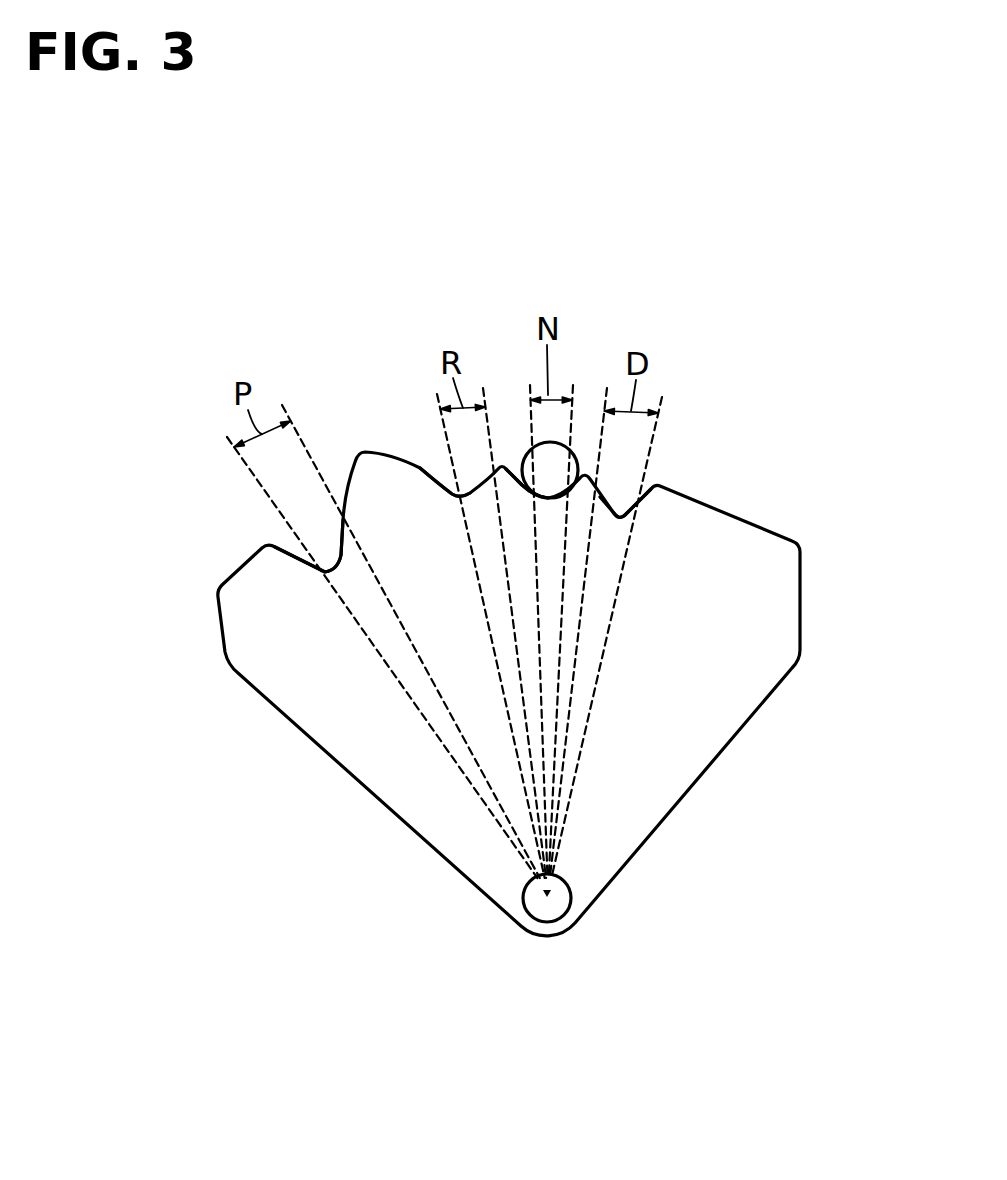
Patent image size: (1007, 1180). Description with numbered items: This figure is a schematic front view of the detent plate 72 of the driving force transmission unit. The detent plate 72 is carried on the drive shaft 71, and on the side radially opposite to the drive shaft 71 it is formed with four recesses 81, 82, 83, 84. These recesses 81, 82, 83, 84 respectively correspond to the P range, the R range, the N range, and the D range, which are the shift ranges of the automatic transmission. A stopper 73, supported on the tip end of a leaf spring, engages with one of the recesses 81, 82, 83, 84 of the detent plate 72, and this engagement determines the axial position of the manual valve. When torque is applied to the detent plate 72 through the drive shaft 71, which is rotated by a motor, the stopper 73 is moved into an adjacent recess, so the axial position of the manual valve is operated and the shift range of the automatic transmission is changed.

The drive shaft 71 is at (523, 906).
The detent plate 72 is at (752, 518).
The stopper 73 is at (574, 455).
The recess 81 is at (342, 560).
The recess 82 is at (460, 495).
The recess 83 is at (550, 505).
The recess 84 is at (622, 530).